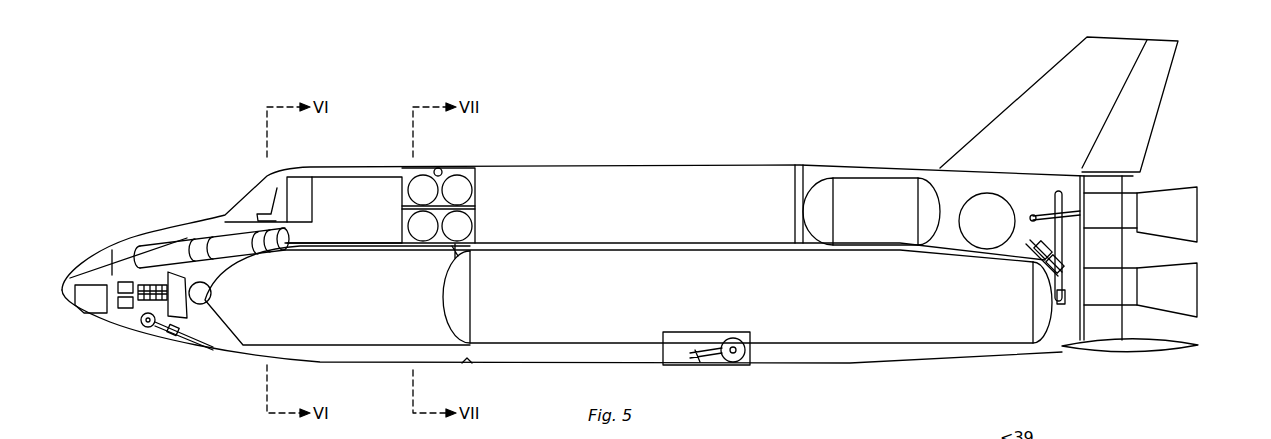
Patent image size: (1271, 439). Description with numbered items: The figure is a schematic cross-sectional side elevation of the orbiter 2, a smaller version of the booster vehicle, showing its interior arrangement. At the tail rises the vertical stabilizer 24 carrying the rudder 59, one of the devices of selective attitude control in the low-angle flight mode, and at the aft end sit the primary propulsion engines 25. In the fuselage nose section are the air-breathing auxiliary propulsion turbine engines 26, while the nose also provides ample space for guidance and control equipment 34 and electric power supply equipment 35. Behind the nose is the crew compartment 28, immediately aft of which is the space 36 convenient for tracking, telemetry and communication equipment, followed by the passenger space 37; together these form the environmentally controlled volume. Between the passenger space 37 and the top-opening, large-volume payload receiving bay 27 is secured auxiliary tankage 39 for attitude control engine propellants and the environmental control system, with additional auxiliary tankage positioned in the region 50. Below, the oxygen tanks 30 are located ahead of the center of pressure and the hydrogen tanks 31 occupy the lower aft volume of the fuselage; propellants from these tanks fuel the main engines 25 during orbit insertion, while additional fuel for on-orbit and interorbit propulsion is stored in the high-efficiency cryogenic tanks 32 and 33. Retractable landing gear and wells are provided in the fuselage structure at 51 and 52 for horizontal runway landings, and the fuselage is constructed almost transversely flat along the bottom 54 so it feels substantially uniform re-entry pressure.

The orbiter 2 is at (708, 204).
The vertical stabilizer 24 is at (1059, 104).
The primary propulsion engines 25 is at (1180, 285).
The auxiliary engines 26 is at (197, 242).
The payload receiving bay 27 is at (700, 208).
The crew compartment 28 is at (258, 207).
The oxygen tanks 30 is at (337, 295).
The hydrogen tanks 31 is at (747, 297).
The tank 32 is at (987, 221).
The tank 33 is at (871, 211).
The guidance and control equipment 34 is at (90, 298).
The electric power supply equipment 35 is at (123, 312).
The space 36 is at (300, 192).
The passenger space 37 is at (344, 210).
The auxiliary tankage 39 is at (460, 186).
The region 50 is at (197, 305).
The landing gear well 51 is at (160, 325).
The landing gear well 52 is at (715, 360).
The bottom 54 is at (543, 364).
The rudder 59 is at (1114, 104).